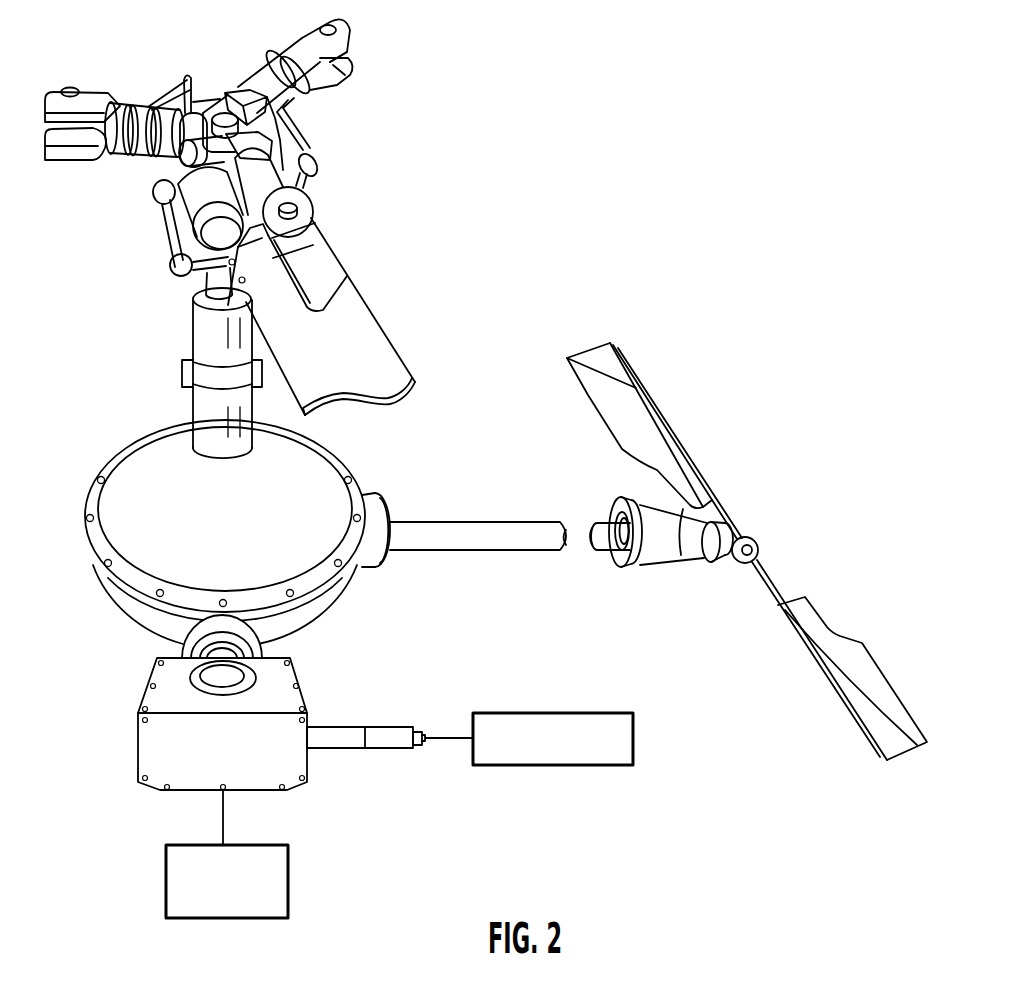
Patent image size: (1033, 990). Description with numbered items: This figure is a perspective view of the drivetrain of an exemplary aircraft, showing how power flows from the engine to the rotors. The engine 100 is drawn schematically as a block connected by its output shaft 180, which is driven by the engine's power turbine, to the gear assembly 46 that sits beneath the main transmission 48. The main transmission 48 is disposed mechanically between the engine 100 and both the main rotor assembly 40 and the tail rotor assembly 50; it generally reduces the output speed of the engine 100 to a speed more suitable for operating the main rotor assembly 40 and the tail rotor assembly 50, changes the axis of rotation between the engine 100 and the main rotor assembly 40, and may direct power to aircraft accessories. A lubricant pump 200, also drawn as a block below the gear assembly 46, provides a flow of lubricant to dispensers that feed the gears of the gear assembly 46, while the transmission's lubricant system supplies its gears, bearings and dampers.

The main rotor assembly 40 is at (331, 183).
The gear assembly 46 is at (287, 793).
The main transmission 48 is at (323, 620).
The tail rotor assembly 50 is at (752, 530).
The output shaft 180 is at (385, 725).
The engine 100 is at (570, 752).
The lubricant pump 200 is at (242, 894).